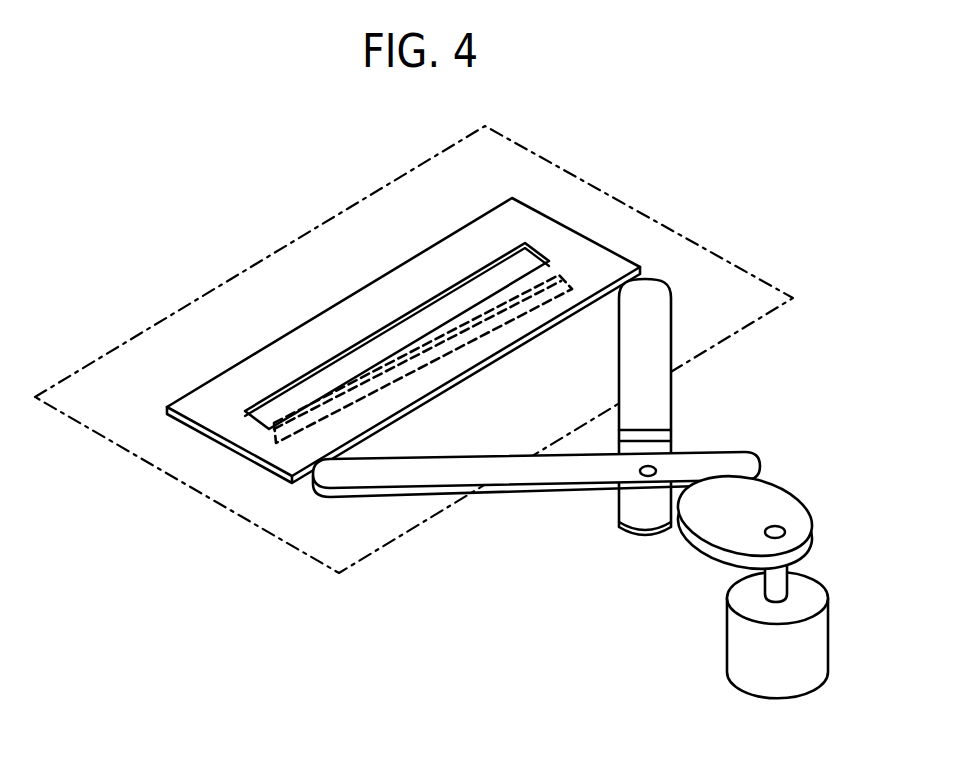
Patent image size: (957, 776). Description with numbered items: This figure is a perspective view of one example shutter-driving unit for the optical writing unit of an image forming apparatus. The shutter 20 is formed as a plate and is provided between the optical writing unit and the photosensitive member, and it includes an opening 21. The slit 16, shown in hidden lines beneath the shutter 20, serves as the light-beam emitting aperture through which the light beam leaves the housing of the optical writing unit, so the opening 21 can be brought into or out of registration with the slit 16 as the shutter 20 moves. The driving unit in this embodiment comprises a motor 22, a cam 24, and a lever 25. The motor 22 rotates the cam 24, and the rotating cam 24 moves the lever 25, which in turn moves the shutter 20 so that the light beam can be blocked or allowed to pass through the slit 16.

The slit 16 is at (462, 342).
The shutter 20 is at (430, 262).
The opening 21 is at (343, 352).
The motor 22 is at (735, 642).
The cam 24 is at (782, 502).
The lever 25 is at (665, 315).